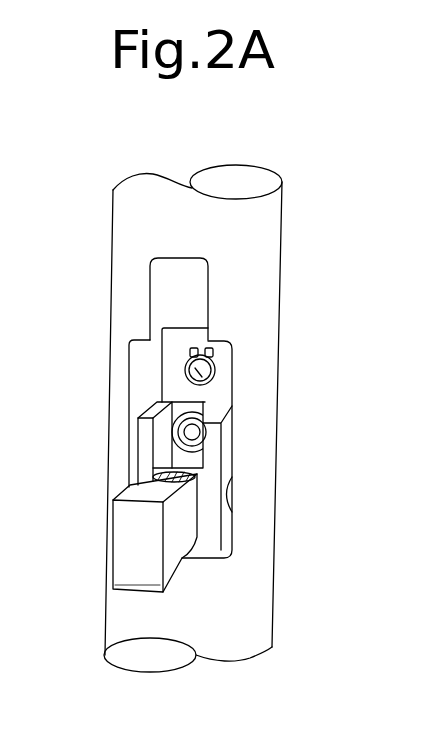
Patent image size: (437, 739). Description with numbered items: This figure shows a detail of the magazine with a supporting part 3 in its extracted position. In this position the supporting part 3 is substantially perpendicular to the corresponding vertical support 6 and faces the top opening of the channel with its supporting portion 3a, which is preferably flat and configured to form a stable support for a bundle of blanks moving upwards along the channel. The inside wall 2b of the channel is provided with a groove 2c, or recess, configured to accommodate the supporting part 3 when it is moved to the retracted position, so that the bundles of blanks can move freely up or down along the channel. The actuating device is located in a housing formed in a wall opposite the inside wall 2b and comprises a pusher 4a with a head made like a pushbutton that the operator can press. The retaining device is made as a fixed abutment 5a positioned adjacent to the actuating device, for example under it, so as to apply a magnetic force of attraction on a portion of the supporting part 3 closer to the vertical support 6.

The vertical support 6 is at (258, 242).
The inside wall 2b is at (212, 612).
The groove 2c is at (145, 363).
The supporting part 3 is at (112, 568).
The supporting portion 3a is at (138, 489).
The pusher 4a is at (208, 386).
The fixed abutment 5a is at (197, 438).